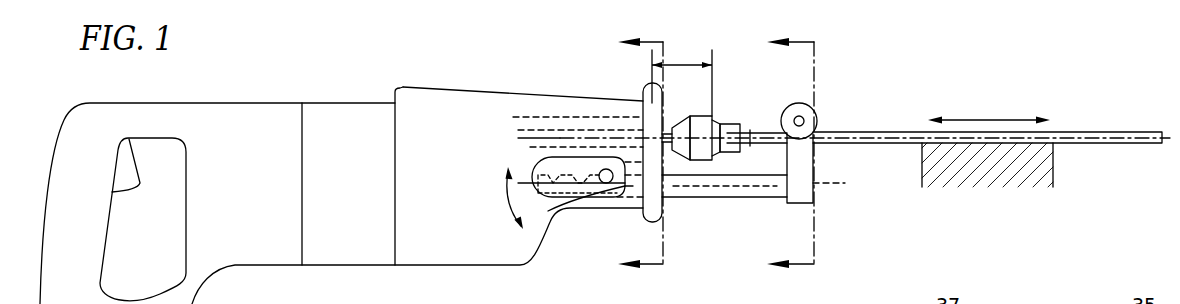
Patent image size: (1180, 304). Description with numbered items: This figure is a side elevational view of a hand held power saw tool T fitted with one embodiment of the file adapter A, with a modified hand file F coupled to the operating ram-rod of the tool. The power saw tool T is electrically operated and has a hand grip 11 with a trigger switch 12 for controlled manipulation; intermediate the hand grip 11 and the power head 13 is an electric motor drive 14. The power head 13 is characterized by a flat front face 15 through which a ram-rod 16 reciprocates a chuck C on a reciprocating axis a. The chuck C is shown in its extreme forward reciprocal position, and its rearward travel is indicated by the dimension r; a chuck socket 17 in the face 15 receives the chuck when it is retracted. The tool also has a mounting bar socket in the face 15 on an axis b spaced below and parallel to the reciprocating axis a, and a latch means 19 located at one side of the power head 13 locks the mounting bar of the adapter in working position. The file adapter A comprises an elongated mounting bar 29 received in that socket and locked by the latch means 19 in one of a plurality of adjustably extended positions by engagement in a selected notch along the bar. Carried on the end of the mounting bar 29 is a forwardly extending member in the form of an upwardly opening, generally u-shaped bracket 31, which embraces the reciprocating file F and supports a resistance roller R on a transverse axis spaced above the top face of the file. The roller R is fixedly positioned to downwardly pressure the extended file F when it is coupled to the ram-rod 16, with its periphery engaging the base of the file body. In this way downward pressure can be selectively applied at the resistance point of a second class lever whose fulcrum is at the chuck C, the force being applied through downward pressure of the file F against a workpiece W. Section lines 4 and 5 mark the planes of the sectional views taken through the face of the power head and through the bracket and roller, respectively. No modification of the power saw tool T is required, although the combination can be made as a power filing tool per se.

The power saw tool T is at (272, 84).
The hand grip 11 is at (72, 132).
The trigger switch 12 is at (135, 158).
The power head 13 is at (433, 100).
The electric motor drive 14 is at (344, 118).
The flat front face 15 is at (663, 105).
The ram-rod 16 is at (565, 127).
The chuck socket 17 is at (628, 117).
The latch means 19 is at (538, 165).
The reciprocating axis a is at (518, 138).
The axis of mounting bar socket b is at (633, 186).
The rearward travel dimension r is at (688, 62).
The section line 4- 4 is at (632, 154).
The section line 5- 5 is at (781, 154).
The chuck C is at (693, 166).
The mounting bar 29 is at (755, 197).
The resistance roller R is at (818, 106).
The u-shaped bracket 31 is at (823, 162).
The file adapter A is at (813, 196).
The file F is at (1067, 125).
The workpiece W is at (985, 170).